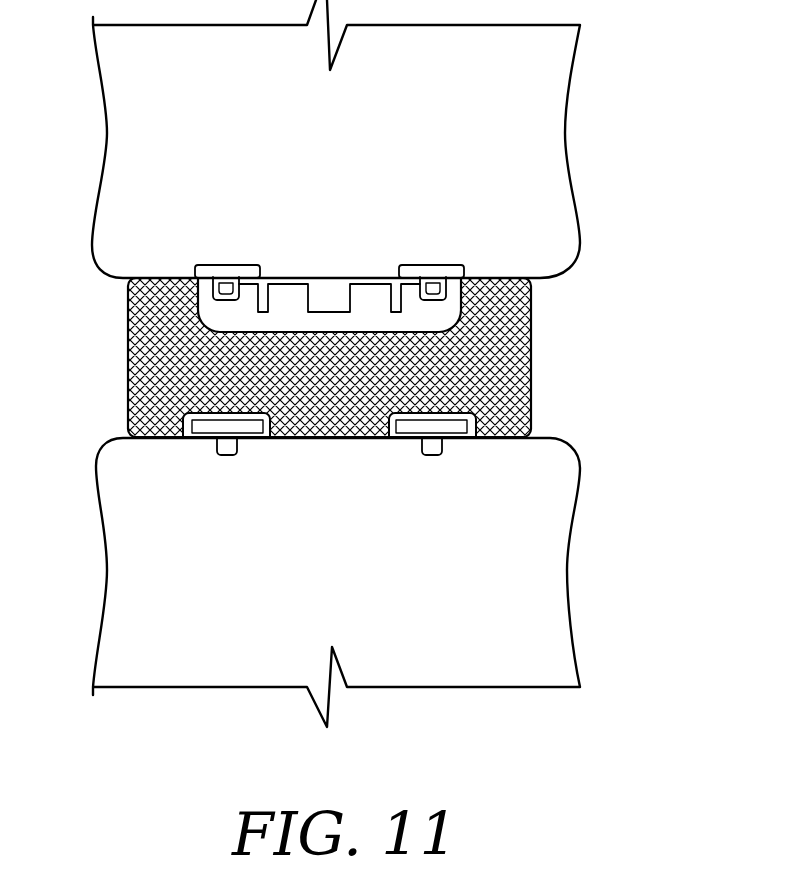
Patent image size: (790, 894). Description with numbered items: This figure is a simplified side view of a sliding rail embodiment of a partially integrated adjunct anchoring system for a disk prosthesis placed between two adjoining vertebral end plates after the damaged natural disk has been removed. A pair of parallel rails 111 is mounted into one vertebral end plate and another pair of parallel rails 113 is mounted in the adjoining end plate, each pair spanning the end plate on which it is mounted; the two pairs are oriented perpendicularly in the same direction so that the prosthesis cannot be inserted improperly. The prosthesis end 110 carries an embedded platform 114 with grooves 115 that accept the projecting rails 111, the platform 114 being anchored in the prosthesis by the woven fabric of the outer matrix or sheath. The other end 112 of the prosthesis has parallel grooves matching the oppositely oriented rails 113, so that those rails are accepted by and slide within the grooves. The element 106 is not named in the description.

The contact plates 106 is at (411, 432).
The prosthesis end 110 is at (500, 278).
The parallel rails 111 is at (243, 268).
The other end of the prosthesis 112 is at (500, 440).
The parallel rails 113 is at (228, 456).
The embedded platform 114 is at (447, 278).
The grooves 115 is at (207, 318).